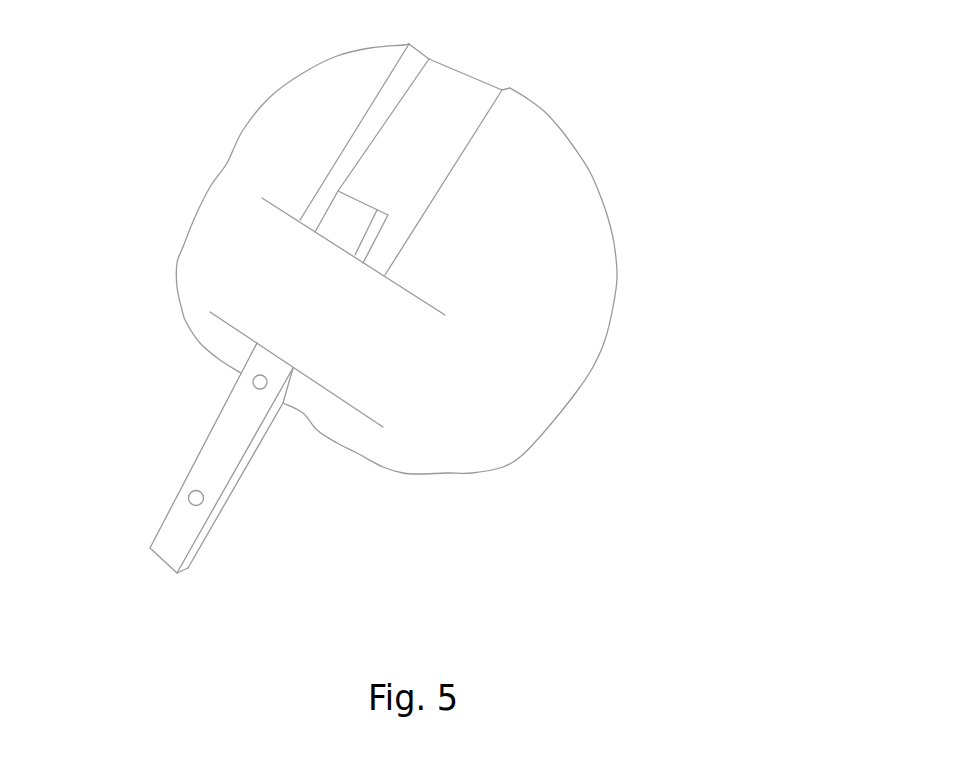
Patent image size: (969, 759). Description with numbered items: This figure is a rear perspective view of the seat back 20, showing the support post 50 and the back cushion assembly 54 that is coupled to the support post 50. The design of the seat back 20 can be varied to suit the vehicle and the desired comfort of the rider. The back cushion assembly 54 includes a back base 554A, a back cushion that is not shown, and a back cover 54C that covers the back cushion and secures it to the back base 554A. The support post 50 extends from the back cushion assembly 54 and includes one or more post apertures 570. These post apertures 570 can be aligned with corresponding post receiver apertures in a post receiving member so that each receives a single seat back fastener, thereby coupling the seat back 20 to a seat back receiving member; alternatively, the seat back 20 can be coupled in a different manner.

The seat back 20 is at (414, 294).
The support post 50 is at (212, 458).
The back cushion assembly 54 is at (480, 245).
The back cover 54C is at (600, 270).
The back base 554A is at (463, 90).
The post apertures 570 is at (192, 497).